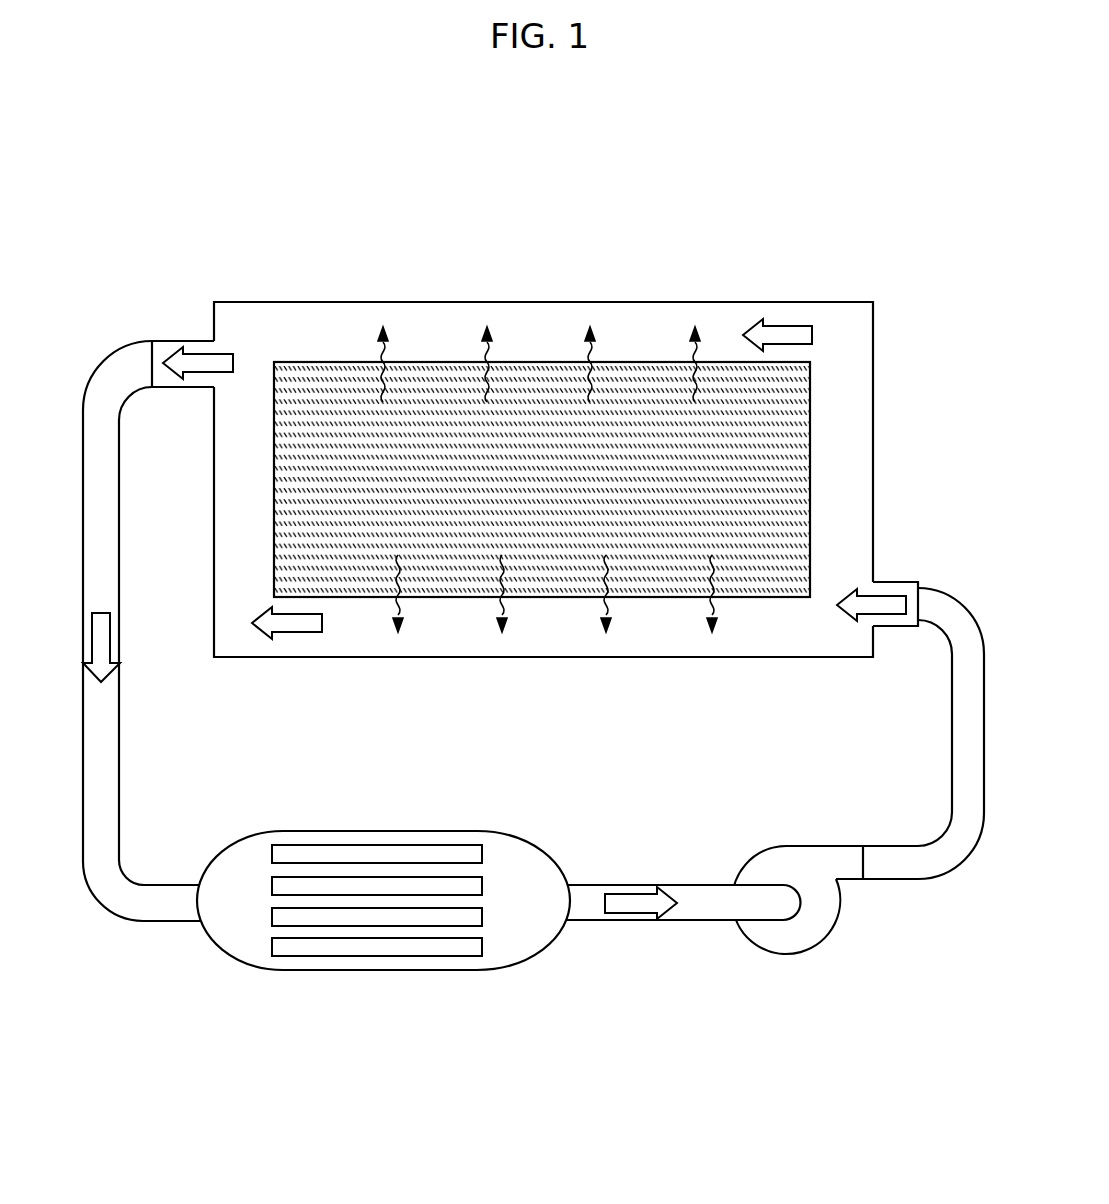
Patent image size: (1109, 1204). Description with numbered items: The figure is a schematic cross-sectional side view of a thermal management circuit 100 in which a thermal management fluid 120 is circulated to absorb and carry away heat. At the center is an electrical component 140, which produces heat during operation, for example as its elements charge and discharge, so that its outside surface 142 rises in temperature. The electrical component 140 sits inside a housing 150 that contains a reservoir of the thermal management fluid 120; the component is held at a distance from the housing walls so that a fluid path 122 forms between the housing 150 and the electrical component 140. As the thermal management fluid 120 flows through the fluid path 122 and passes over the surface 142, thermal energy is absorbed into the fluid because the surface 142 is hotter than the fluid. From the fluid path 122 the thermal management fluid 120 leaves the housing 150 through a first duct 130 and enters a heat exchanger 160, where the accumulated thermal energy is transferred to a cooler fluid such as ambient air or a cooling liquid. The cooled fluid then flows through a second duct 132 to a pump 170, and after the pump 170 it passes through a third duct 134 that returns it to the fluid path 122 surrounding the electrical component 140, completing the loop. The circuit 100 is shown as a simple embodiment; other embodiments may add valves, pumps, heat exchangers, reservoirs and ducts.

The thermal management circuit 100 is at (817, 242).
The thermal management fluid 120 is at (97, 427).
The fluid path 122 is at (888, 603).
The first duct 130 is at (115, 908).
The second duct 132 is at (633, 925).
The third duct 134 is at (962, 863).
The electrical component 140 is at (536, 341).
The surface 142 is at (442, 362).
The housing 150 is at (262, 658).
The heat exchanger 160 is at (334, 1008).
The pump 170 is at (777, 973).